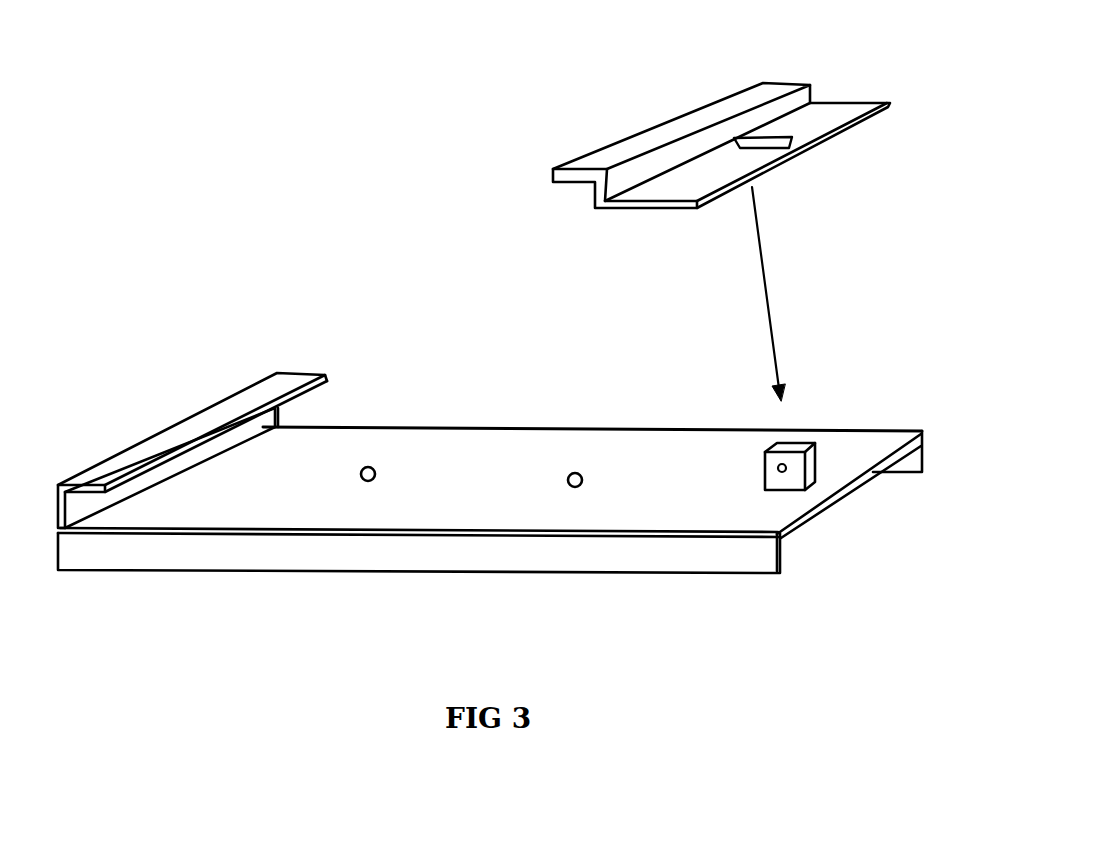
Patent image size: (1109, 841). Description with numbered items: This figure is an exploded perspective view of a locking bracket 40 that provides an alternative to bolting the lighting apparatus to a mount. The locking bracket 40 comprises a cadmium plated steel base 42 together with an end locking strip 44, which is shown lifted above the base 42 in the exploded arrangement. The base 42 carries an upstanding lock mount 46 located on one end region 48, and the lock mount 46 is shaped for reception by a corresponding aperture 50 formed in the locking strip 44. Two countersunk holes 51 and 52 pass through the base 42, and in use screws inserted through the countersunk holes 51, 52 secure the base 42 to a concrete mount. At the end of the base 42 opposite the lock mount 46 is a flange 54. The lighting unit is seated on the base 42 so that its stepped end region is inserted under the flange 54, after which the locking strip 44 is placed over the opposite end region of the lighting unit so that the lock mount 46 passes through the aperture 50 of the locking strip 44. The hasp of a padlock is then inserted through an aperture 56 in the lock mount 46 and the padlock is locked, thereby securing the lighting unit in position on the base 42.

The locking bracket 40 is at (320, 298).
The base 42 is at (515, 505).
The end locking strip 44 is at (675, 175).
The lock mount 46 is at (796, 447).
The end region 48 is at (847, 460).
The aperture 50 is at (795, 148).
The countersunk hole 51 is at (357, 475).
The countersunk hole 52 is at (584, 477).
The flange 54 is at (326, 373).
The aperture 56 is at (786, 471).